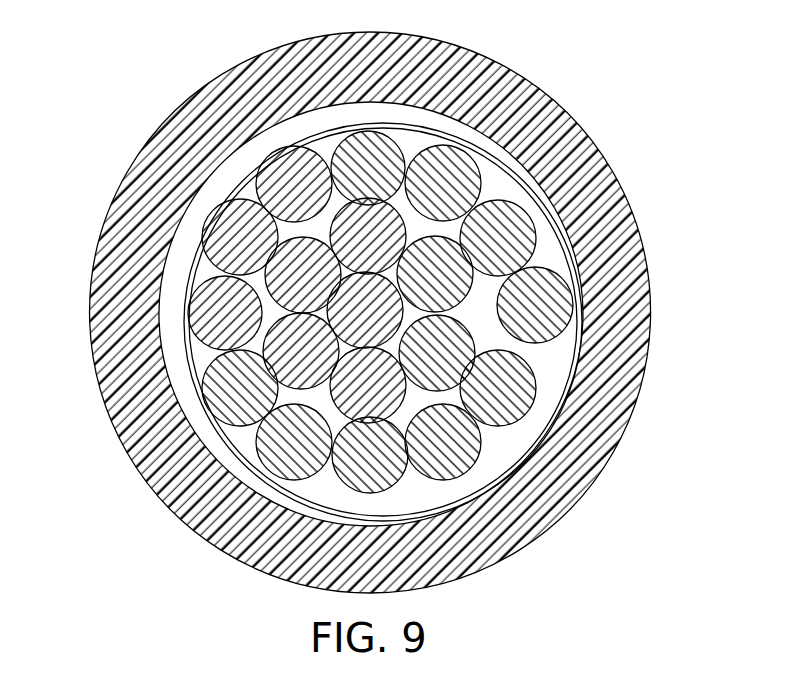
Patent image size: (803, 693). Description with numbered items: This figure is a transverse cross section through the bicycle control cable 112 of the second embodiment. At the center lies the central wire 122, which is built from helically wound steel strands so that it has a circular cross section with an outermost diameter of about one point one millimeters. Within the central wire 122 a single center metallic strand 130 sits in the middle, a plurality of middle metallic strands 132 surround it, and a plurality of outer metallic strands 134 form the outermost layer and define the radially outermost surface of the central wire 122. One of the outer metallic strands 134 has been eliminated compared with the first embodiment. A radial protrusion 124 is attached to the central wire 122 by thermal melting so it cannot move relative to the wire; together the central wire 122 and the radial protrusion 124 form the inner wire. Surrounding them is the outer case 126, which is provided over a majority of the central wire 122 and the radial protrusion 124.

The bicycle control cable 112 is at (365, 300).
The central wire 122 is at (500, 178).
The radial protrusion 124 is at (545, 310).
The outer case 126 is at (578, 506).
The center metallic strand 130 is at (360, 303).
The middle metallic strands 132 is at (293, 272).
The outer metallic strands 134 is at (240, 388).